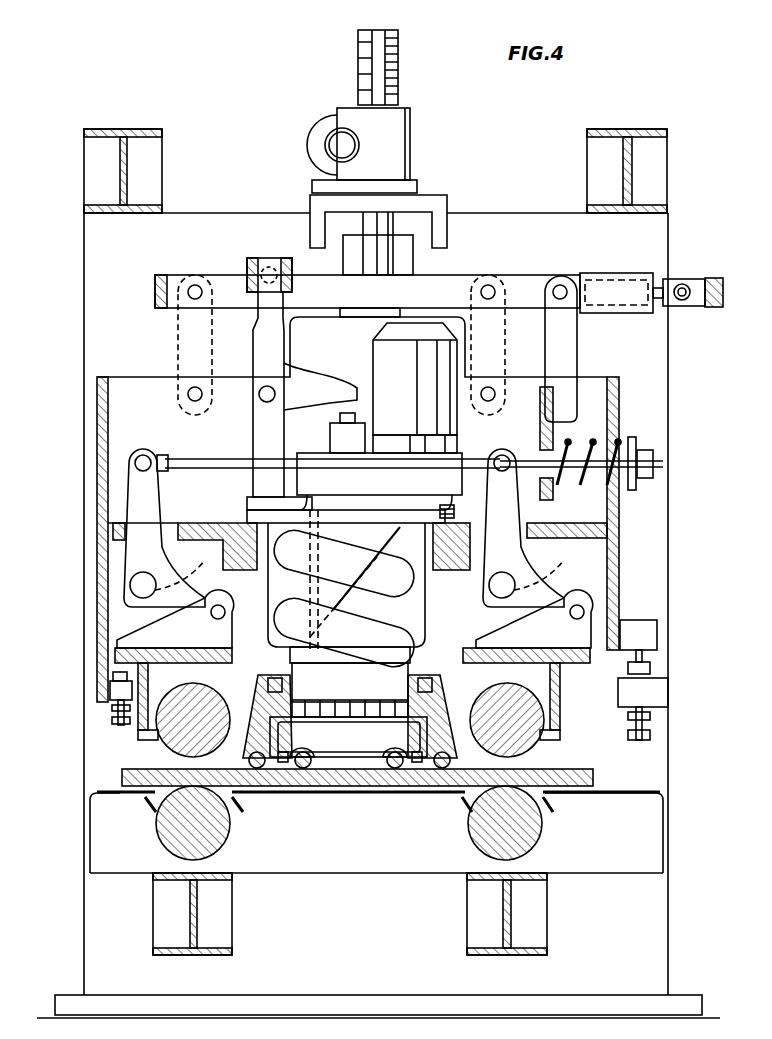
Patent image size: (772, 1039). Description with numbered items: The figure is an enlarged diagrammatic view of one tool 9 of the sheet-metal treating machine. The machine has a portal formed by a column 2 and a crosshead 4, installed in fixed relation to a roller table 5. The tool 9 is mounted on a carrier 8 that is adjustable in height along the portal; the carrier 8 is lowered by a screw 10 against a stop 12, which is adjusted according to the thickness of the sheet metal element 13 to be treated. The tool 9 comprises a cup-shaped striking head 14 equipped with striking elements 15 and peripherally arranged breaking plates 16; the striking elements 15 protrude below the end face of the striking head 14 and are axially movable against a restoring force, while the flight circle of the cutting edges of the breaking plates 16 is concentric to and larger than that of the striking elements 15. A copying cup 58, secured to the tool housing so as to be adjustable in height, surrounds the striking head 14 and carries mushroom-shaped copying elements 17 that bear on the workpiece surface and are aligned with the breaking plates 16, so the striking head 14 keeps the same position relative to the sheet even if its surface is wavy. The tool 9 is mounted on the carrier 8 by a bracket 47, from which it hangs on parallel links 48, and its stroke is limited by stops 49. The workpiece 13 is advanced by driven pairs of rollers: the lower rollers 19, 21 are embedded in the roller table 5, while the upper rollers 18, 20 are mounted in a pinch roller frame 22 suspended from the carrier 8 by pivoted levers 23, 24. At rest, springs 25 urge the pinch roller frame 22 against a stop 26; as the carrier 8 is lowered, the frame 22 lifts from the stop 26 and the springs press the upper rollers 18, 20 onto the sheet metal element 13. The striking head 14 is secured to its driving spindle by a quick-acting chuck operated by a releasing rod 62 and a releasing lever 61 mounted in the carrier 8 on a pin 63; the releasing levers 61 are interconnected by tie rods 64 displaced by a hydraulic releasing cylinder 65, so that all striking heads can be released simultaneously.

The column 2 is at (212, 240).
The crosshead 4 is at (630, 168).
The roller table 5 is at (630, 852).
The carrier 8 is at (613, 550).
The tool 9 is at (428, 473).
The screw 10 is at (368, 50).
The stop 12 is at (645, 672).
The sheet metal element 13 is at (367, 768).
The striking head 14 is at (340, 745).
The striking element 15 is at (397, 768).
The breaking plate 16 is at (277, 762).
The copying element 17 is at (440, 768).
The upper roller 18 is at (190, 725).
The lower roller 19 is at (195, 822).
The upper roller 20 is at (520, 745).
The lower roller 21 is at (510, 832).
The pinch roller frame 22 is at (200, 658).
The pivoted lever 23 is at (142, 515).
The pivoted lever 24 is at (545, 592).
The spring 25 is at (600, 455).
The stop 26 is at (118, 676).
The bracket 47 is at (293, 588).
The parallel link 48 is at (262, 525).
The stop 49 is at (447, 513).
The copying cup 58 is at (447, 713).
The releasing lever 61 is at (262, 327).
The releasing rod 62 is at (335, 418).
The pin 63 is at (262, 387).
The tie rod 64 is at (453, 262).
The hydraulic releasing cylinder 65 is at (613, 288).